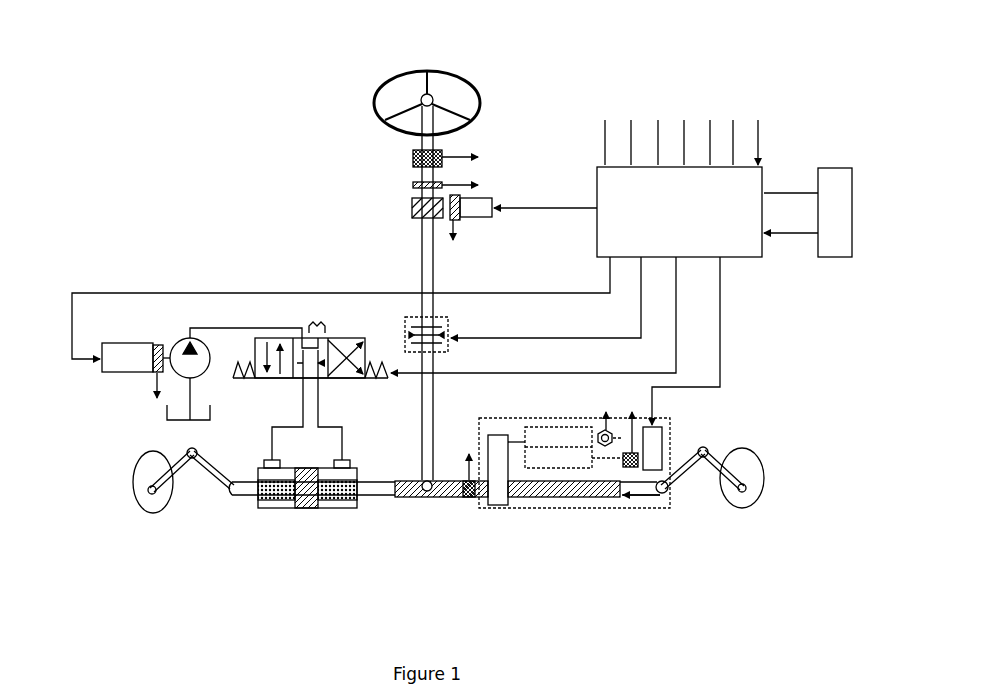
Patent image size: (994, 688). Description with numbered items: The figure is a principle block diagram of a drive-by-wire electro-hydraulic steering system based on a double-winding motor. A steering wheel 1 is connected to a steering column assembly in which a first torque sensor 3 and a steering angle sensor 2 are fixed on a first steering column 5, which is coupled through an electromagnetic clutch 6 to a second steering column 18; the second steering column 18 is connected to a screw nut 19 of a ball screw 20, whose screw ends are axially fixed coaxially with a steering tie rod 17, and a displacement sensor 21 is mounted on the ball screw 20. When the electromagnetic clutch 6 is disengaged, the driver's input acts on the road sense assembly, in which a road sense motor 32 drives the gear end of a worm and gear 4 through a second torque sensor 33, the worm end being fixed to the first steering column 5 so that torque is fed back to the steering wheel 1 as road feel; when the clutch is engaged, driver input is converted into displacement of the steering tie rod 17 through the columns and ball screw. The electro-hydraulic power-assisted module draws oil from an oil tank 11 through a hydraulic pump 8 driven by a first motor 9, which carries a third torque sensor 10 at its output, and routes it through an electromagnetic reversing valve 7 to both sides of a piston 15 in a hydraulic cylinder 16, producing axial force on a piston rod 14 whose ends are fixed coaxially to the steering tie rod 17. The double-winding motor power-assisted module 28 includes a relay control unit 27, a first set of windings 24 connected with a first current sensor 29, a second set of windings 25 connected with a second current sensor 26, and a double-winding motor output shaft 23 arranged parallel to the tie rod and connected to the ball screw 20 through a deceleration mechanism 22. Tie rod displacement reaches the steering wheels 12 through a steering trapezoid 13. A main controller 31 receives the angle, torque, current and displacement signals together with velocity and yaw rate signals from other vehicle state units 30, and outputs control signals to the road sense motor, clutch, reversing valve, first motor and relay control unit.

The steering wheel 1 is at (413, 152).
The steering angle sensor 2 is at (414, 167).
The first torque sensor 3 is at (412, 186).
The worm and gear 4 is at (411, 205).
The first steering column 5 is at (418, 247).
The electromagnetic clutch 6 is at (405, 320).
The electromagnetic reversing valve 7 is at (262, 342).
The hydraulic pump 8 is at (158, 345).
The first motor 9 is at (100, 352).
The third torque sensor 10 is at (160, 372).
The oil tank 11 is at (167, 420).
The steering wheel 12 is at (138, 500).
The steering trapezoid 13 is at (228, 490).
The piston rod 14 is at (262, 506).
The piston 15 is at (300, 508).
The hydraulic cylinder 16 is at (338, 508).
The steering tie rod 17 is at (422, 405).
The second steering column 18 is at (375, 495).
The screw nut 19 is at (420, 497).
The ball screw 20 is at (452, 497).
The displacement sensor 21 is at (468, 500).
The deceleration mechanism 22 is at (502, 502).
The double-winding motor output shaft 23 is at (515, 448).
The first set of windings 24 is at (558, 457).
The second set of windings 25 is at (590, 440).
The second current sensor 26 is at (633, 452).
The relay control unit 27 is at (735, 505).
The double-winding motor power-assisted module 28 is at (662, 450).
The first current sensor 29 is at (612, 435).
The other vehicle state units 30 is at (828, 175).
The main controller 31 is at (762, 173).
The road sense motor 32 is at (490, 200).
The second torque sensor 33 is at (458, 197).